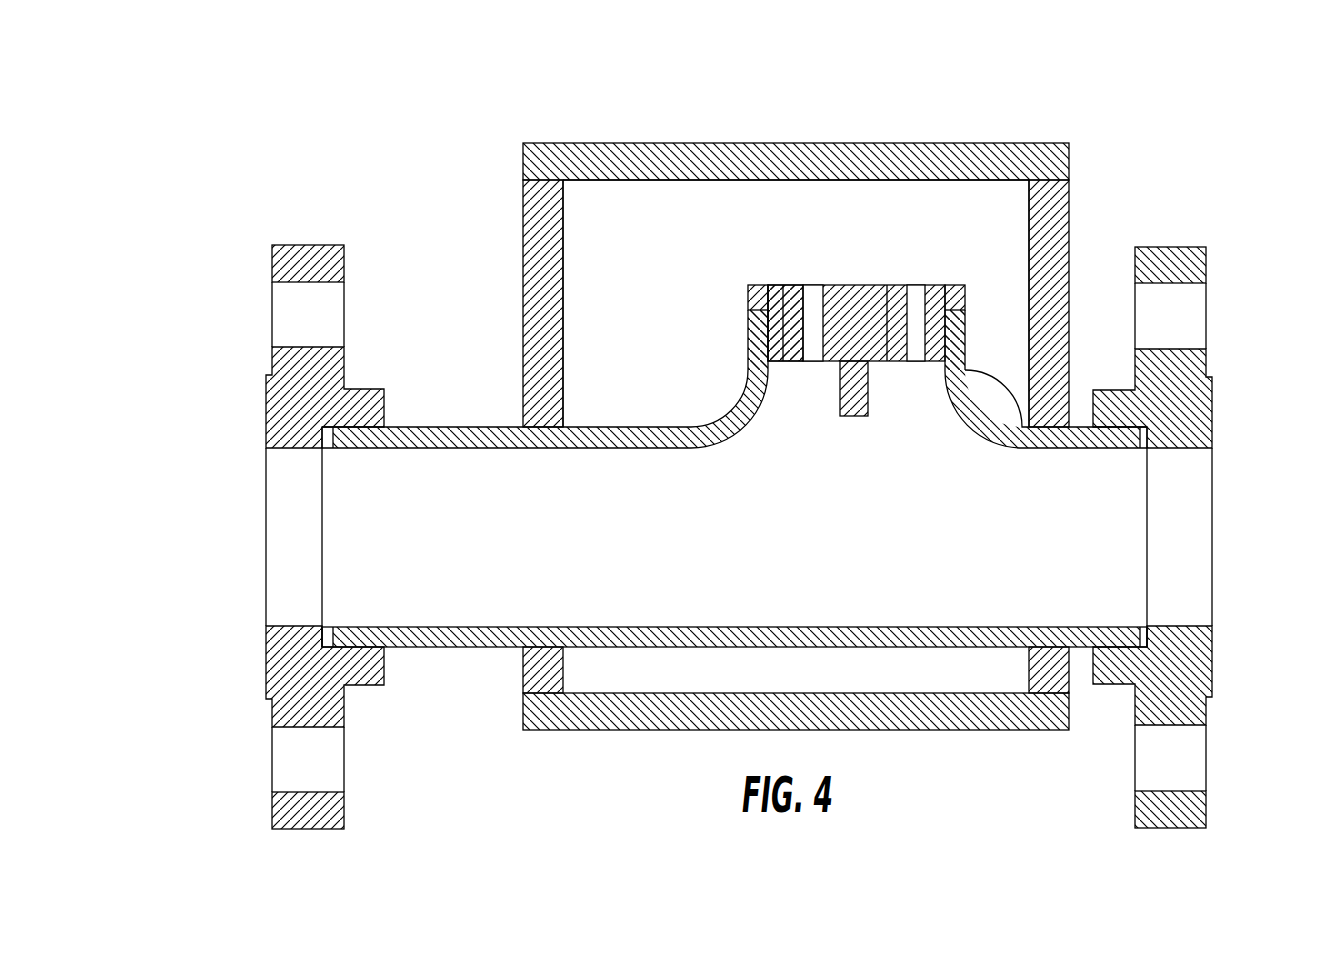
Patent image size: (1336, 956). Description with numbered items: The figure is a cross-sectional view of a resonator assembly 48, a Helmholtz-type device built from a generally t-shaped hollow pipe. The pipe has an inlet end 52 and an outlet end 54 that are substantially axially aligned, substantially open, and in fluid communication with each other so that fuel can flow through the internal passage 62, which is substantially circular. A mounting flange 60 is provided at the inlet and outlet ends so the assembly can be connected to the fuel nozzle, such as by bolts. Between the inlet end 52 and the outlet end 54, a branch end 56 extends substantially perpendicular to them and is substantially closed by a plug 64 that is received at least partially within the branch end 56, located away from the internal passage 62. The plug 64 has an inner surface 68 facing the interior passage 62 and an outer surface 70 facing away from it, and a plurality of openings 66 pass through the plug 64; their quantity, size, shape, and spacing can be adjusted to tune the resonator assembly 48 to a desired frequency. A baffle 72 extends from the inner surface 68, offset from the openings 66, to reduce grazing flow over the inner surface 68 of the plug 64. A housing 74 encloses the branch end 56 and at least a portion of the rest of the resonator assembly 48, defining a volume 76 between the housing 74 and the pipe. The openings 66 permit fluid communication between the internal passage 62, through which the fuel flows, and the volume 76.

The resonator assembly 48 is at (266, 138).
The inlet end 52 is at (320, 545).
The outlet end 54 is at (1152, 538).
The branch end 56 is at (992, 261).
The mounting flange 60 is at (1190, 808).
The internal passage 62 is at (504, 548).
The plug 64 is at (852, 285).
The openings 66 is at (813, 287).
The inner surface 68 is at (788, 363).
The outer surface 70 is at (765, 287).
The baffle 72 is at (852, 418).
The housing 74 is at (578, 143).
The volume 76 is at (643, 275).